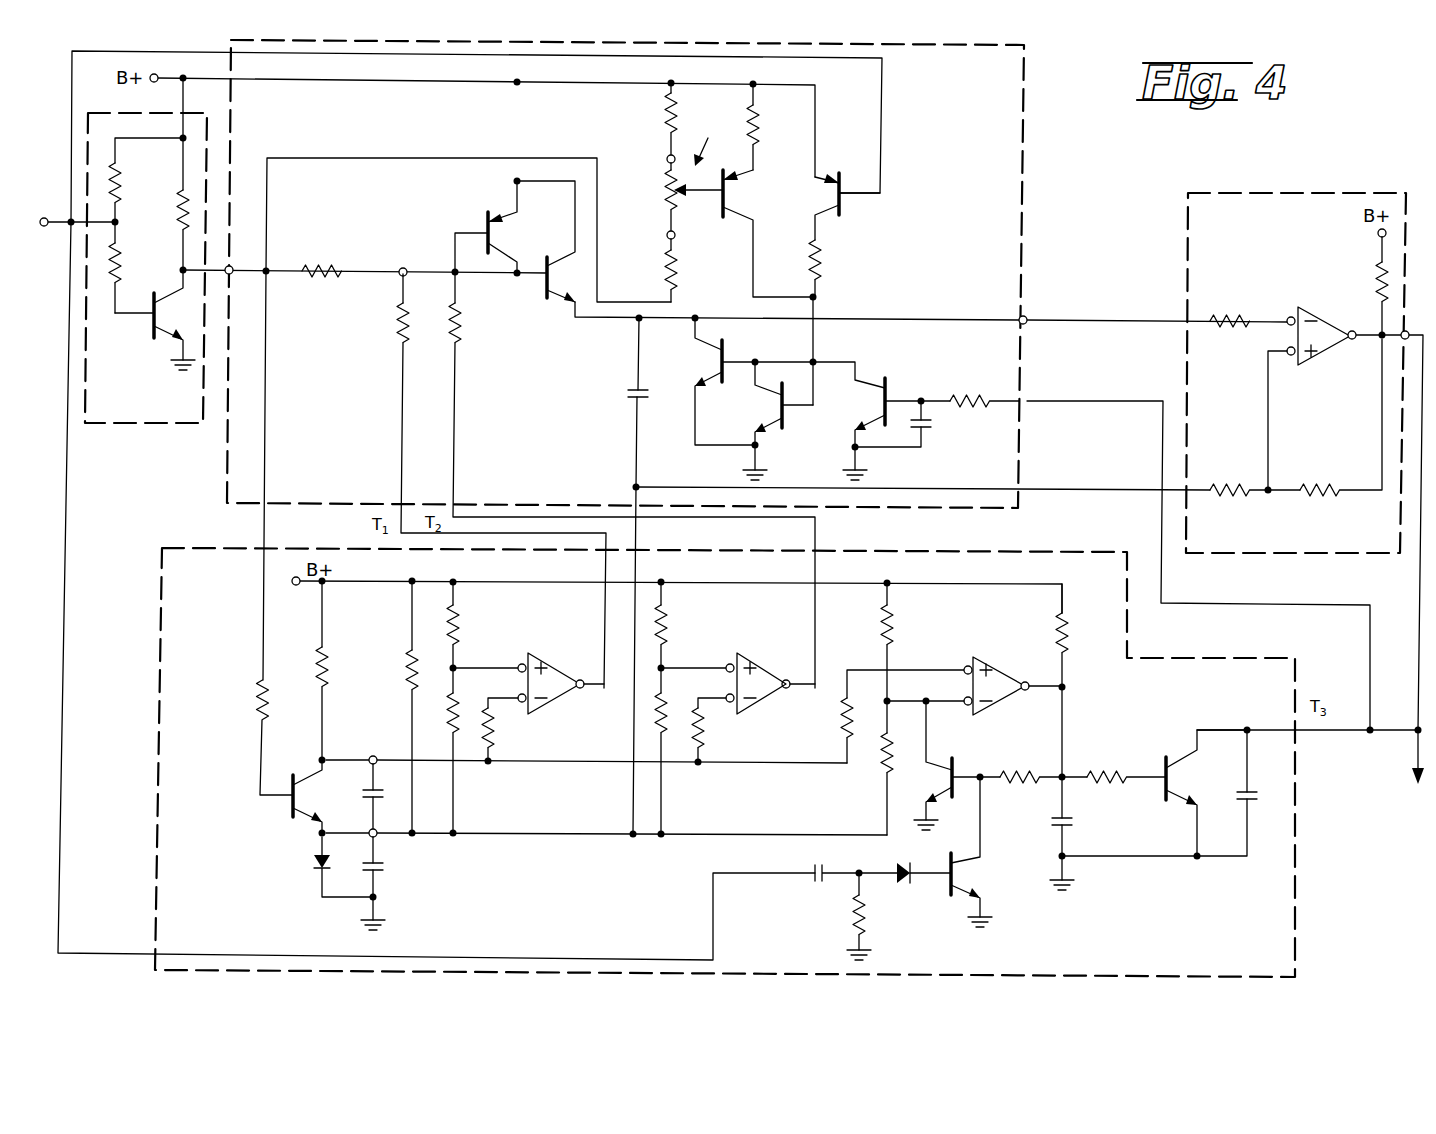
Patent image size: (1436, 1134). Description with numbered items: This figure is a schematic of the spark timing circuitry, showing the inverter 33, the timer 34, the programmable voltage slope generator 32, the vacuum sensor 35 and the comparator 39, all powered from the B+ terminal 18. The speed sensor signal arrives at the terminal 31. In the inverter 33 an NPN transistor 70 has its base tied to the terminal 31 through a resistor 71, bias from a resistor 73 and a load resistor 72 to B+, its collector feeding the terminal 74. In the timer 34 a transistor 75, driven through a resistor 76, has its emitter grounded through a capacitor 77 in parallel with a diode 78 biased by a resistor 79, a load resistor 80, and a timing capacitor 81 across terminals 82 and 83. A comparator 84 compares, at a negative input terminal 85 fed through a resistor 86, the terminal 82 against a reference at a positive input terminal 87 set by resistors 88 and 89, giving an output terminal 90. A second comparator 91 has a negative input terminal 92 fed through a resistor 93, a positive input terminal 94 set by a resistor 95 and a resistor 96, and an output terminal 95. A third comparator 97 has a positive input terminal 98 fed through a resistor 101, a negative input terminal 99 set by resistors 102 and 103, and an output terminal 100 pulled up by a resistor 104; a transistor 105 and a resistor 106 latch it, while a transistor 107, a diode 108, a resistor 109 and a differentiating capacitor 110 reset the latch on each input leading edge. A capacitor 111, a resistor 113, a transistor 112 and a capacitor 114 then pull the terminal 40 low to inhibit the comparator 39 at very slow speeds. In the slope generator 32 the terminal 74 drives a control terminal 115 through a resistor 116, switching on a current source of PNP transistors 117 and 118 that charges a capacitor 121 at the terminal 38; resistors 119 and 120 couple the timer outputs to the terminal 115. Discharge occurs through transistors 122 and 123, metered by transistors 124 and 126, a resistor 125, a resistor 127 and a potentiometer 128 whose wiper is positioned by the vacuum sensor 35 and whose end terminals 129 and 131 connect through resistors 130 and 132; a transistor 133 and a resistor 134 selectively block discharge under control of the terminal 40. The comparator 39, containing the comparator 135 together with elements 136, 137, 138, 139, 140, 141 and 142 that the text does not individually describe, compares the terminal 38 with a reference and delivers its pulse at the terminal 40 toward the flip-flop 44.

The B+ terminal 18 is at (152, 83).
The terminal 31 is at (44, 226).
The programmable voltage slope generator 32 is at (1027, 208).
The inverter circuit stage 33 is at (165, 425).
The timer circuit 34 is at (158, 660).
The vacuum sensor 35 is at (709, 137).
The terminal 38 is at (1028, 314).
The comparator 39 is at (1318, 191).
The output terminal 40 is at (1406, 331).
The D type flip-flop 44 is at (1370, 814).
The NPN transistor 70 is at (162, 336).
The resistor 71 is at (121, 281).
The load resistor 72 is at (178, 212).
The resistor 73 is at (120, 190).
The terminal 74 is at (230, 265).
The NPN transistor 75 is at (298, 818).
The resistor 76 is at (256, 690).
The capacitor 77 is at (380, 870).
The diode 78 is at (312, 866).
The resistor 79 is at (407, 665).
The load resistor 80 is at (333, 665).
The timing capacitor 81 is at (368, 800).
The terminal 82 is at (373, 755).
The terminal 83 is at (378, 839).
The DC level comparator circuit 84 is at (556, 672).
The negative input terminal 85 is at (524, 706).
The resistor 86 is at (495, 740).
The positive input terminal 87 is at (521, 663).
The resistor 88 is at (462, 625).
The resistor 89 is at (462, 712).
The output terminal 90 is at (582, 690).
The second DC comparator circuit 91 is at (762, 672).
The negative input terminal 92 is at (732, 705).
The resistor 93 is at (706, 744).
The positive input terminal 94 is at (728, 663).
The output terminal 95 is at (670, 626).
The resistor 96 is at (668, 712).
The third DC level comparator 97 is at (1005, 672).
The positive input terminal 98 is at (965, 665).
The negative input terminal 99 is at (966, 706).
The output terminal 100 is at (1028, 692).
The resistor 101 is at (843, 722).
The resistor 102 is at (892, 626).
The resistor 103 is at (882, 765).
The resistor 104 is at (1058, 632).
The NPN transistor 105 is at (940, 760).
The resistor 106 is at (1025, 785).
The NPN transistor 107 is at (975, 870).
The diode 108 is at (906, 881).
The resistor 109 is at (852, 920).
The differentiating capacitor 110 is at (808, 878).
The capacitor 111 is at (1072, 826).
The NPN transistor 112 is at (1186, 780).
The resistor 113 is at (1113, 775).
The capacitor 114 is at (1252, 800).
The current source control terminal 115 is at (402, 266).
The resistor 116 is at (320, 263).
The PNP transistor 117 is at (510, 228).
The PNP transistor 118 is at (552, 292).
The resistor 119 is at (400, 318).
The resistor 120 is at (462, 340).
The capacitor 121 is at (632, 398).
The NPN transistor 122 is at (708, 358).
The NPN transistor 123 is at (768, 402).
The PNP transistor 124 is at (748, 188).
The resistor 125 is at (823, 262).
The PNP transistor 126 is at (820, 200).
The resistor 127 is at (757, 126).
The potentiometer 128 is at (664, 197).
The first end terminal 129 is at (666, 157).
The resistor 130 is at (662, 121).
The second end terminal 131 is at (667, 236).
The resistor 132 is at (677, 258).
The NPN transistor 133 is at (860, 408).
The resistor 134 is at (968, 397).
The comparator 135 is at (1323, 324).
The non-inverting input 136 is at (1294, 362).
The inverting input 137 is at (1287, 314).
The resistor 138 is at (1228, 312).
The output 139 is at (1354, 342).
The resistor 140 is at (1376, 276).
The resistor 141 is at (1320, 486).
The resistor 142 is at (1226, 486).